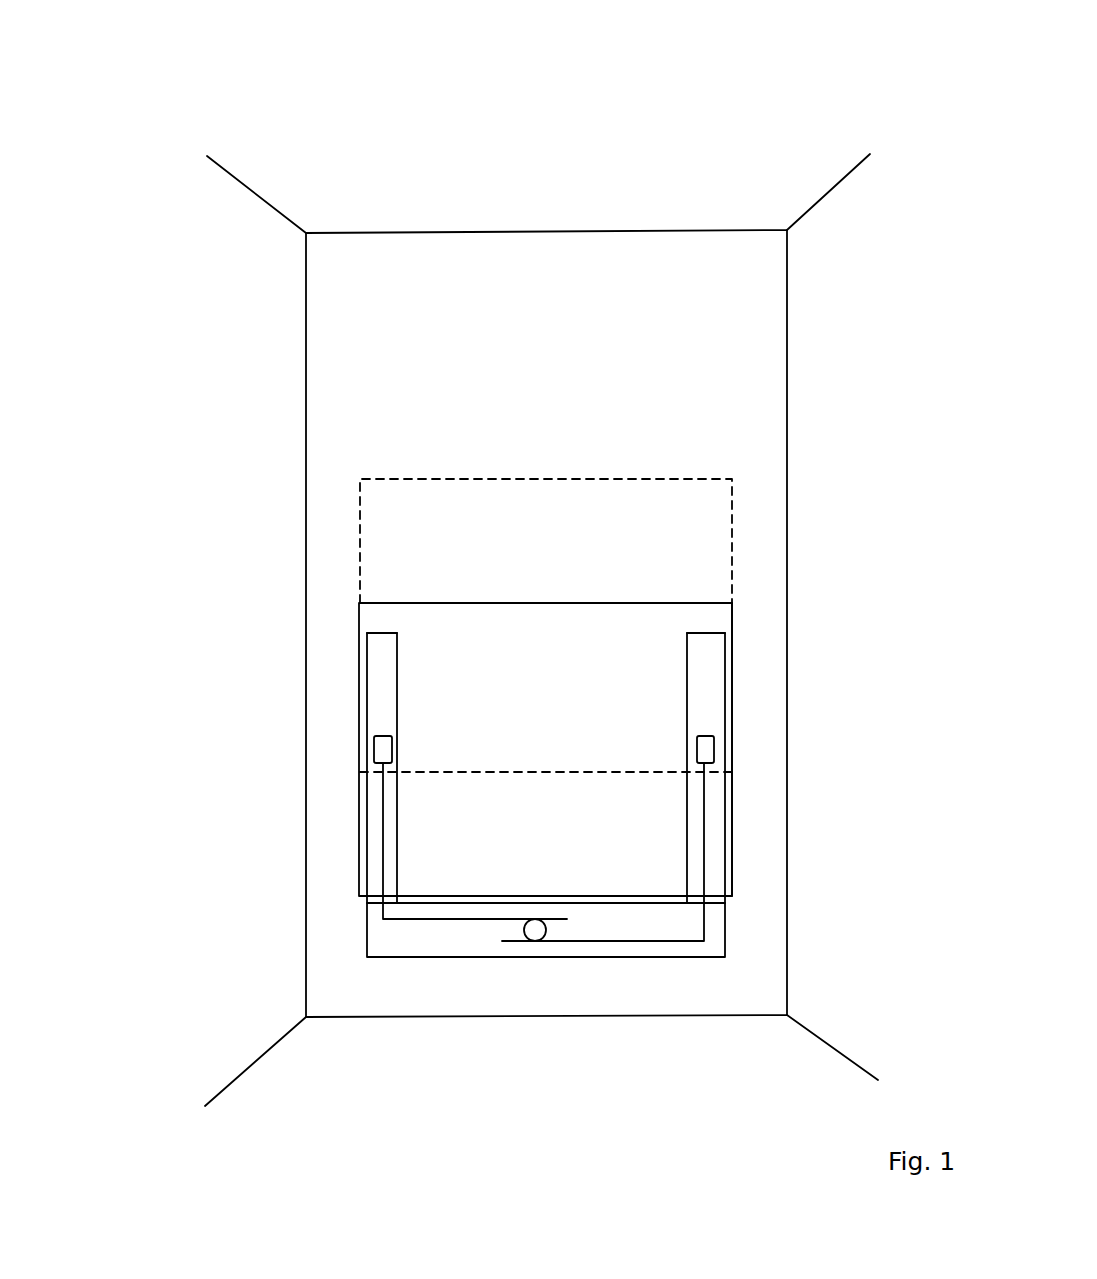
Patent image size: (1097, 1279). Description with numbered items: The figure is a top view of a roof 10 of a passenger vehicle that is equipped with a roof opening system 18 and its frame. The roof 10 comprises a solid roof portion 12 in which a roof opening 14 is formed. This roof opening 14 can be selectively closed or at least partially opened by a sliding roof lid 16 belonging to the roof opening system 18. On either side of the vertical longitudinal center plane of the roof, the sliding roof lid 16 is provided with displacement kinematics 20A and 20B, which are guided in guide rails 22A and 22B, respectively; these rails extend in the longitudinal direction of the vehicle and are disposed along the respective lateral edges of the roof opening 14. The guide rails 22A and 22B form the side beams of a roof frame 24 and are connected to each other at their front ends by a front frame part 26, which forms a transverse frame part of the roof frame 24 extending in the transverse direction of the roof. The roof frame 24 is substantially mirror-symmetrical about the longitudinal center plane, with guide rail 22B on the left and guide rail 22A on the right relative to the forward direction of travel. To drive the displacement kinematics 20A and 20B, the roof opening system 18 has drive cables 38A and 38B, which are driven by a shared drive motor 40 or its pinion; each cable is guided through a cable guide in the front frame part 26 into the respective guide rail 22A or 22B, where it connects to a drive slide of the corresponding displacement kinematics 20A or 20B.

The roof 10 is at (801, 91).
The solid roof portion 12 is at (720, 287).
The roof opening 14 is at (358, 628).
The sliding roof lid 16 is at (689, 506).
The roof opening system 18 is at (738, 634).
The displacement kinematics 20A is at (383, 748).
The displacement kinematics 20B is at (705, 745).
The guide rail 22A is at (383, 678).
The guide rail 22B is at (714, 635).
The roof frame 24 is at (412, 965).
The front frame part 26 is at (448, 952).
The drive cable 38A is at (482, 920).
The drive cable 38B is at (620, 941).
The drive motor 40 is at (537, 937).